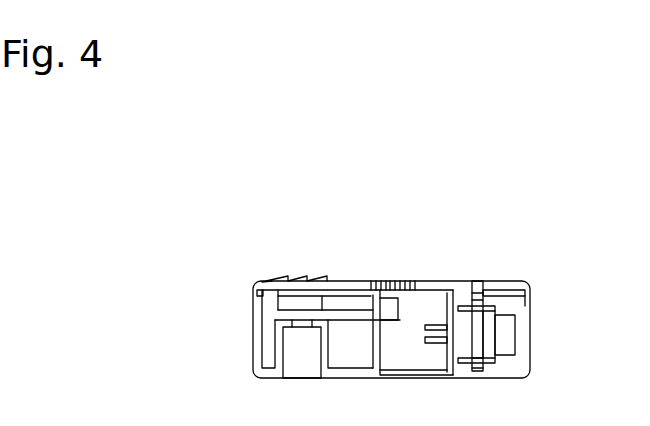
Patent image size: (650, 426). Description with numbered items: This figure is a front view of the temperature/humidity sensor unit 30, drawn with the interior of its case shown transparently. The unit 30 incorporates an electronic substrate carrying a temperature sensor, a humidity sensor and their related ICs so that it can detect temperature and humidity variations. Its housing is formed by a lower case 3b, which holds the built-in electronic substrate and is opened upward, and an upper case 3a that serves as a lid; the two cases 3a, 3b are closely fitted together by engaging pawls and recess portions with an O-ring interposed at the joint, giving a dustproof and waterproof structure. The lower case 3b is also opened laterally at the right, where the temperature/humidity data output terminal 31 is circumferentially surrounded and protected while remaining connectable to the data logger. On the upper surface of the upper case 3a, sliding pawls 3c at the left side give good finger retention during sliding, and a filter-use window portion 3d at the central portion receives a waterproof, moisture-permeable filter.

The upper case 3a is at (262, 282).
The lower case 3b is at (256, 339).
The sliding pawls 3c is at (338, 271).
The filter-use window portion 3d is at (422, 272).
The temperature/humidity sensor unit 30 is at (450, 276).
The temperature/humidity data output terminal 31 is at (507, 337).